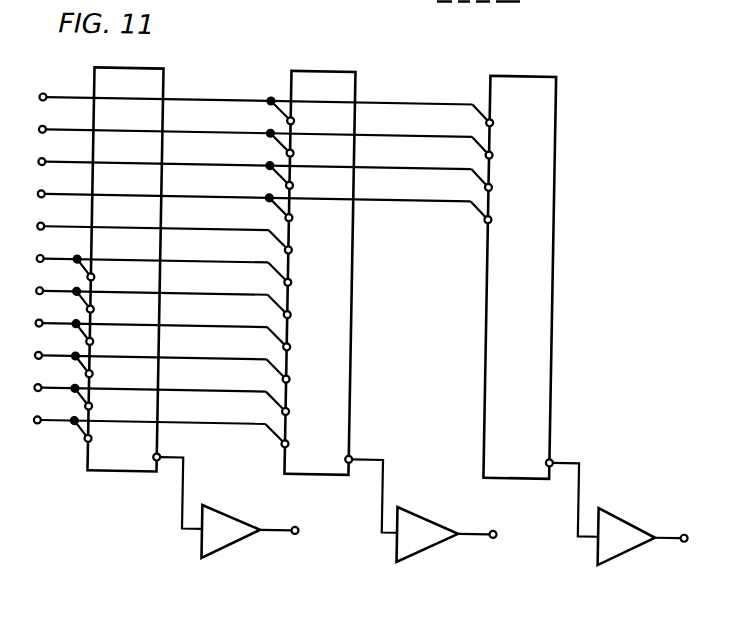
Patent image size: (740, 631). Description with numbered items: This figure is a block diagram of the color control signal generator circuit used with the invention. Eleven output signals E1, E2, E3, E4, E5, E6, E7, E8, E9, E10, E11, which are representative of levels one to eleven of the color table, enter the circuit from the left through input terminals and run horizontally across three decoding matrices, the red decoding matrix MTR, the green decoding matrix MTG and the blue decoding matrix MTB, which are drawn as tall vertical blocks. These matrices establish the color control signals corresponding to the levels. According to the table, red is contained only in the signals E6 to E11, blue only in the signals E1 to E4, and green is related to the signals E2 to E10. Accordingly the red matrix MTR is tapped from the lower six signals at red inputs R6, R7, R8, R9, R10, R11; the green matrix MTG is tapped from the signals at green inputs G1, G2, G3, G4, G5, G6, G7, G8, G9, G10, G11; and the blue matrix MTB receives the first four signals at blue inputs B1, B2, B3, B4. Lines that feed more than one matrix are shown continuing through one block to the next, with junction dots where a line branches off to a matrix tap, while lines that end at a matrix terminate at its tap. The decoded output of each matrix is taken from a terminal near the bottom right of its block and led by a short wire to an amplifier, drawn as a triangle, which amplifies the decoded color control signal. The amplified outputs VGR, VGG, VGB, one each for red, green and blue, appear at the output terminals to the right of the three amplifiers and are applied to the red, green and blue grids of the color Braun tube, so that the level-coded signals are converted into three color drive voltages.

The output signal E1 is at (242, 101).
The output signal E2 is at (241, 134).
The output signal E3 is at (241, 166).
The output signal E4 is at (240, 198).
The output signal E5 is at (138, 230).
The output signal E6 is at (138, 262).
The output signal E7 is at (137, 294).
The output signal E8 is at (137, 327).
The output signal E9 is at (136, 359).
The output signal E10 is at (133, 391).
The output signal E11 is at (133, 423).
The red matrix tap R6 is at (96, 275).
The red matrix tap R7 is at (96, 307).
The red matrix tap R8 is at (95, 339).
The red matrix tap R9 is at (94, 371).
The red matrix tap R10 is at (99, 404).
The red matrix tap R11 is at (98, 436).
The green matrix tap G1 is at (294, 116).
The green matrix tap G2 is at (293, 149).
The green matrix tap G3 is at (293, 181).
The green matrix tap G4 is at (292, 213).
The green matrix tap G5 is at (293, 247).
The green matrix tap G6 is at (293, 279).
The green matrix tap G7 is at (293, 312).
The green matrix tap G8 is at (291, 344).
The green matrix tap G9 is at (291, 376).
The green matrix tap G10 is at (295, 409).
The green matrix tap G11 is at (295, 441).
The blue matrix tap B1 is at (496, 121).
The blue matrix tap B2 is at (495, 154).
The blue matrix tap B3 is at (495, 186).
The blue matrix tap B4 is at (494, 218).
The decoding matrix MTR is at (125, 257).
The decoding matrix MTG is at (319, 261).
The decoding matrix MTB is at (519, 267).
The amplifier output VGR is at (246, 506).
The amplifier output VGG is at (443, 510).
The amplifier output VGB is at (623, 513).